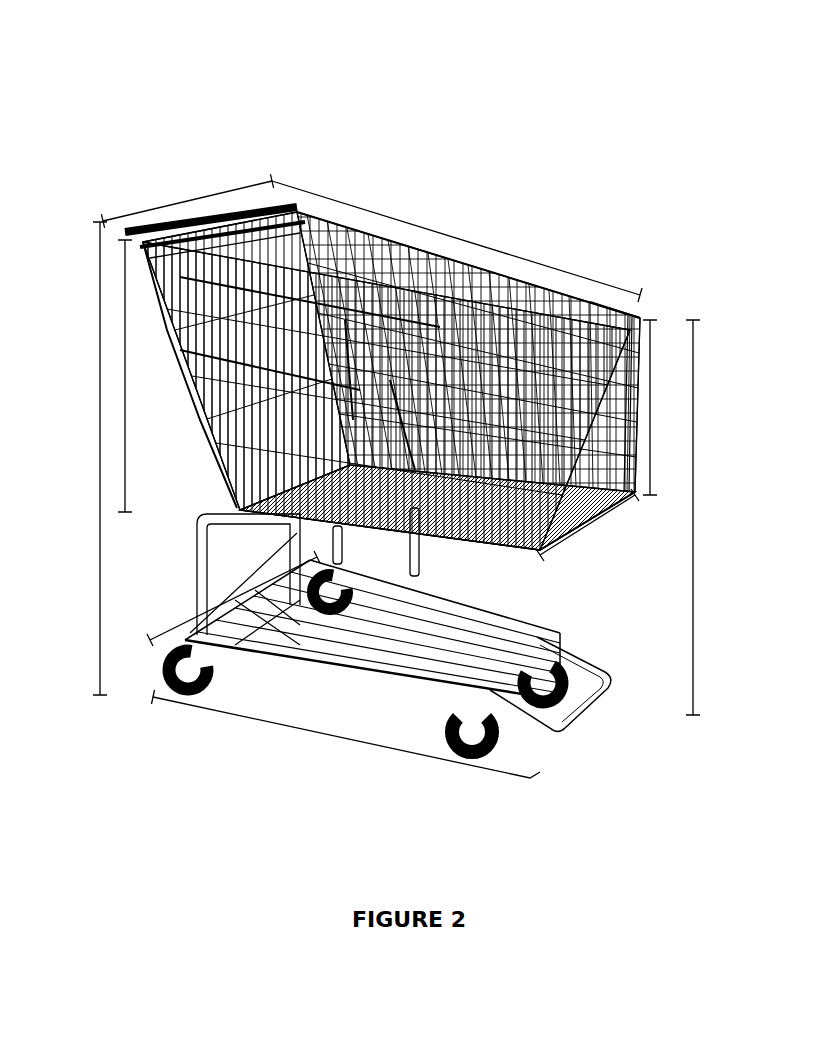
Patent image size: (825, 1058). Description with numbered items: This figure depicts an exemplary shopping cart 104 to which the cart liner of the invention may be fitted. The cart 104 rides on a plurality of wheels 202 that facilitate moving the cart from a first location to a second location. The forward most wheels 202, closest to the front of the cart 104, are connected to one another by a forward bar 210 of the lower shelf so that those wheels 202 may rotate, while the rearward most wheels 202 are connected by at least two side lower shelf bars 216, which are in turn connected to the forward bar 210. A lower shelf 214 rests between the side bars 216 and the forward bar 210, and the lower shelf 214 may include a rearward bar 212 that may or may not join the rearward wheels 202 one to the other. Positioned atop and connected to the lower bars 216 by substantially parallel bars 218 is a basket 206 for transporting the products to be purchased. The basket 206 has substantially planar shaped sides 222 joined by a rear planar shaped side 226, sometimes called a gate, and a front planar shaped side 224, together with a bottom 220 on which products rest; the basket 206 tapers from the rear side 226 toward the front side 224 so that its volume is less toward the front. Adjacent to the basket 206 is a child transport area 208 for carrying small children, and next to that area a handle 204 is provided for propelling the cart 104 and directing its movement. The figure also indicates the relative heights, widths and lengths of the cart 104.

The shopping cart 104 is at (650, 135).
The wheels 202 is at (303, 590).
The handle 204 is at (220, 205).
The basket 206 is at (498, 305).
The child transport area 208 is at (340, 213).
The forward bar 210 is at (558, 633).
The rearward bar 212 is at (253, 616).
The lower shelf 214 is at (453, 615).
The side lower shelf bars 216 is at (407, 685).
The substantially parallel bars 218 is at (445, 559).
The bottom 220 is at (600, 505).
The planar shaped sides 222 is at (607, 307).
The front planar shaped side 224 is at (633, 377).
The rear planar shaped side 226 is at (198, 422).